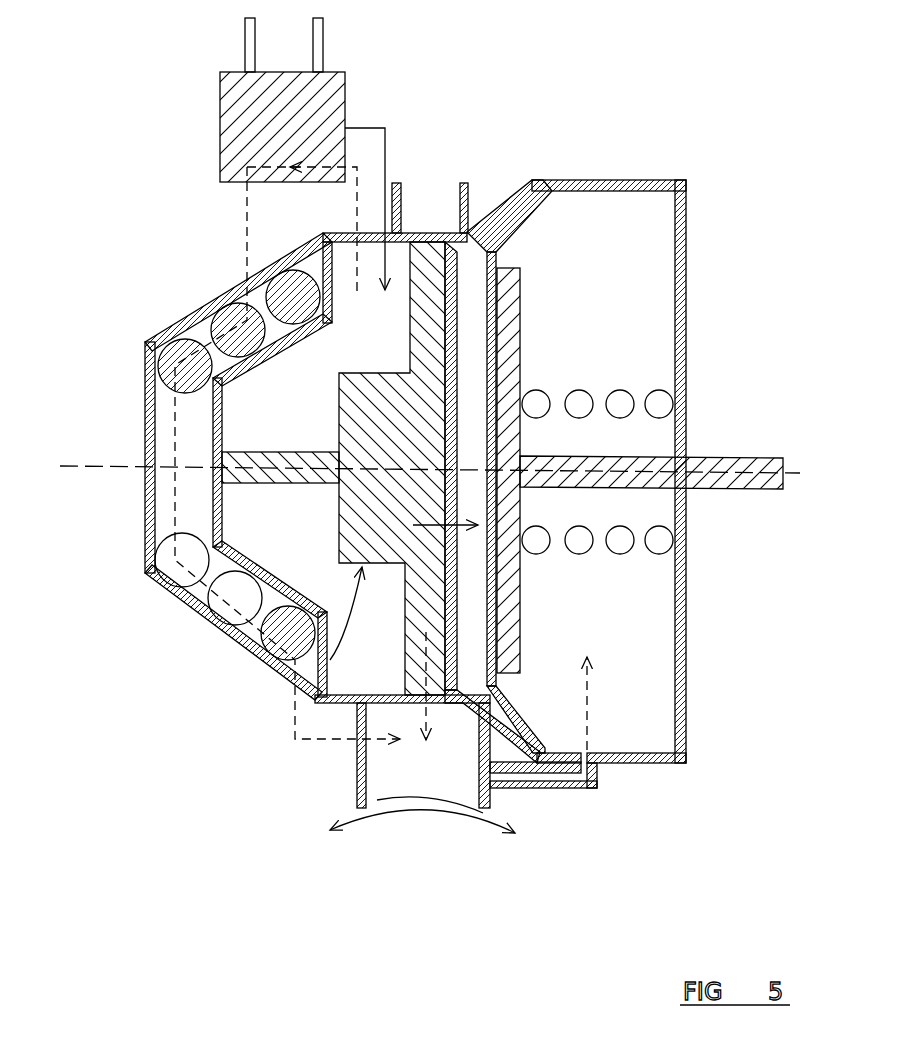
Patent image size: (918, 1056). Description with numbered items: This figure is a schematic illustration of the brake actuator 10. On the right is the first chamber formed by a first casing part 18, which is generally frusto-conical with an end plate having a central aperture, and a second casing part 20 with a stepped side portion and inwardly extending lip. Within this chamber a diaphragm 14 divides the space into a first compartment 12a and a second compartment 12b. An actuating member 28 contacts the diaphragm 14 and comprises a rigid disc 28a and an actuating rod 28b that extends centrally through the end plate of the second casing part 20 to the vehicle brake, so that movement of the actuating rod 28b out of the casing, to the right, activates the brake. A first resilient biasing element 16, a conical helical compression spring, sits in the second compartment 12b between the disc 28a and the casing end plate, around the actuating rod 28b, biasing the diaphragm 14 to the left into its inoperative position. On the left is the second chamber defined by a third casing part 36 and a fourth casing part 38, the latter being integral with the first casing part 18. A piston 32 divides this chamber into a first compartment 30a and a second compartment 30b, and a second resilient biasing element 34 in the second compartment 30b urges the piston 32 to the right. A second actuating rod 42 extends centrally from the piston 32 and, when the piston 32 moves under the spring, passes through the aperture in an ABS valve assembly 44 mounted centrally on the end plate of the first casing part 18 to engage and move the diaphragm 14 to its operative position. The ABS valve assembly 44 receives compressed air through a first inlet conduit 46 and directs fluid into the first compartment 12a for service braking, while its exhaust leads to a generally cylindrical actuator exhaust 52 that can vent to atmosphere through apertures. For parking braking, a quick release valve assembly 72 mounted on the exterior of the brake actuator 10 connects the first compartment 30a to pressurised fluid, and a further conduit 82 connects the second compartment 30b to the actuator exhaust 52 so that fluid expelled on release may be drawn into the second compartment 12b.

The brake actuator 10 is at (593, 125).
The first compartment 12a is at (490, 808).
The second compartment 12b is at (628, 738).
The diaphragm 14 is at (520, 222).
The first resilient biasing element 16 is at (622, 397).
The first casing part 18 is at (508, 200).
The second casing part 20 is at (613, 177).
The actuating member 28 is at (522, 619).
The rigid disc 28a is at (520, 348).
The actuating rod 28b is at (641, 457).
The first compartment 30a is at (358, 673).
The second compartment 30b is at (165, 493).
The piston 32 is at (212, 433).
The second resilient biasing element 34 is at (220, 613).
The third casing part 36 is at (180, 597).
The fourth casing part 38 is at (325, 233).
The second actuating rod 42 is at (147, 538).
The ABS valve assembly 44 is at (300, 672).
The first inlet conduit 46 is at (432, 290).
The actuator exhaust 52 is at (357, 767).
The quick release valve assembly 72 is at (220, 100).
The further conduit 82 is at (563, 788).